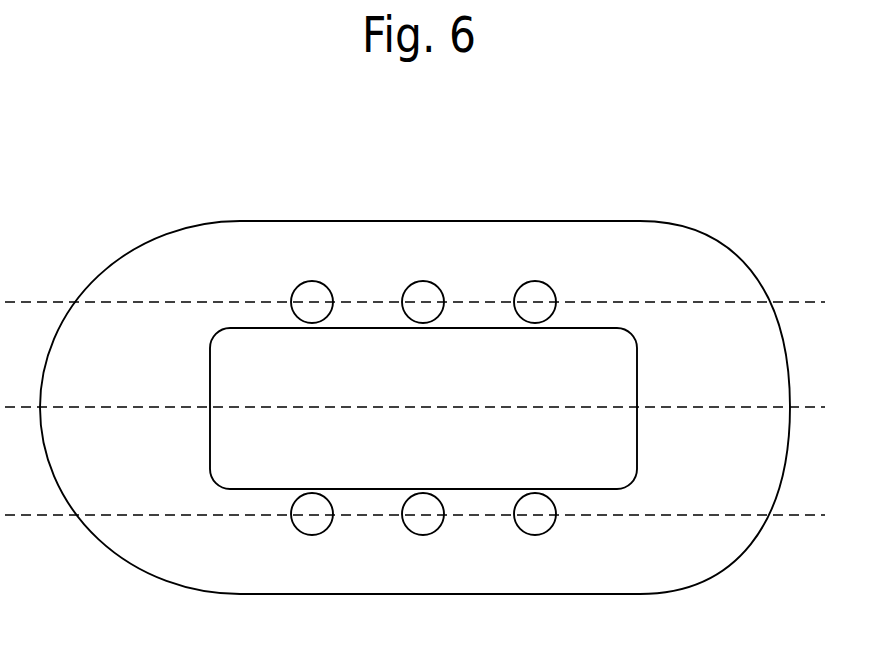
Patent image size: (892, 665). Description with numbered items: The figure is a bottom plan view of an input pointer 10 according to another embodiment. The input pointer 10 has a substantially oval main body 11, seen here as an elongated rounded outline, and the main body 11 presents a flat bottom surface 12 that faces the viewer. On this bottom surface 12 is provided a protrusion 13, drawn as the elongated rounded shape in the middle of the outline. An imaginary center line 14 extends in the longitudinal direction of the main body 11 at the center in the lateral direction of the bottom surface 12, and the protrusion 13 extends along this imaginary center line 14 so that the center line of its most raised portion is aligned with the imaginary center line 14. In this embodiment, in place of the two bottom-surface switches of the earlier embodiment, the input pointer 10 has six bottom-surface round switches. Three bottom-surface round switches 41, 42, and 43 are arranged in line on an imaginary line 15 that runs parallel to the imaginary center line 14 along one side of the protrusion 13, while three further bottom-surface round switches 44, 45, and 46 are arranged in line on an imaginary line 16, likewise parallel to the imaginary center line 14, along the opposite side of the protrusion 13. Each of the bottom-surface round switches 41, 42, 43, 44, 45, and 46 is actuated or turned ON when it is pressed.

The input pointer 10 is at (670, 172).
The main body 11 is at (171, 239).
The bottom surface 12 is at (724, 266).
The protrusion 13 is at (210, 455).
The imaginary center line 14 is at (807, 409).
The imaginary line 15 is at (807, 304).
The imaginary line 16 is at (807, 517).
The bottom-surface round switch 41 is at (312, 281).
The bottom-surface round switch 42 is at (423, 281).
The bottom-surface round switch 43 is at (535, 281).
The bottom-surface round switch 44 is at (312, 535).
The bottom-surface round switch 45 is at (423, 535).
The bottom-surface round switch 46 is at (535, 535).